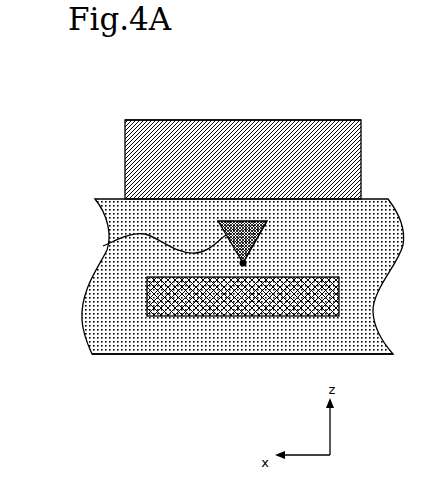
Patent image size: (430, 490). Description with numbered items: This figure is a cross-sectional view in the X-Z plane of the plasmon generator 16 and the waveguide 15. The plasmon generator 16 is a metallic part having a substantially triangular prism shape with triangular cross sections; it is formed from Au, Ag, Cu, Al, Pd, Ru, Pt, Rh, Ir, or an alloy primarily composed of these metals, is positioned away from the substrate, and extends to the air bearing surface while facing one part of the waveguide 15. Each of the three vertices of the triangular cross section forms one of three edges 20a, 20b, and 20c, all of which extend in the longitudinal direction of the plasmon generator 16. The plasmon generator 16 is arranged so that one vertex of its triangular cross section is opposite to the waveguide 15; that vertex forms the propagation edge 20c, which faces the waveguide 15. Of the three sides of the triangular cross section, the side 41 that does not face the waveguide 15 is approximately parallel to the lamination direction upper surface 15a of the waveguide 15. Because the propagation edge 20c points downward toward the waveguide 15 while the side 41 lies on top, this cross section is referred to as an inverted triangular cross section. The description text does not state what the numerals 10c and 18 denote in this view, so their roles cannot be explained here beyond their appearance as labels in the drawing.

The top surface of cladding layer 10c is at (202, 120).
The side 41 is at (243, 262).
The edge 20a is at (218, 221).
The edge 20b is at (267, 221).
The propagation edge 20c is at (243, 265).
The waveguide 15 is at (147, 302).
The lamination direction upper surface 15a is at (300, 277).
The plasmon generator 16 is at (103, 246).
The substrate 18 is at (110, 335).